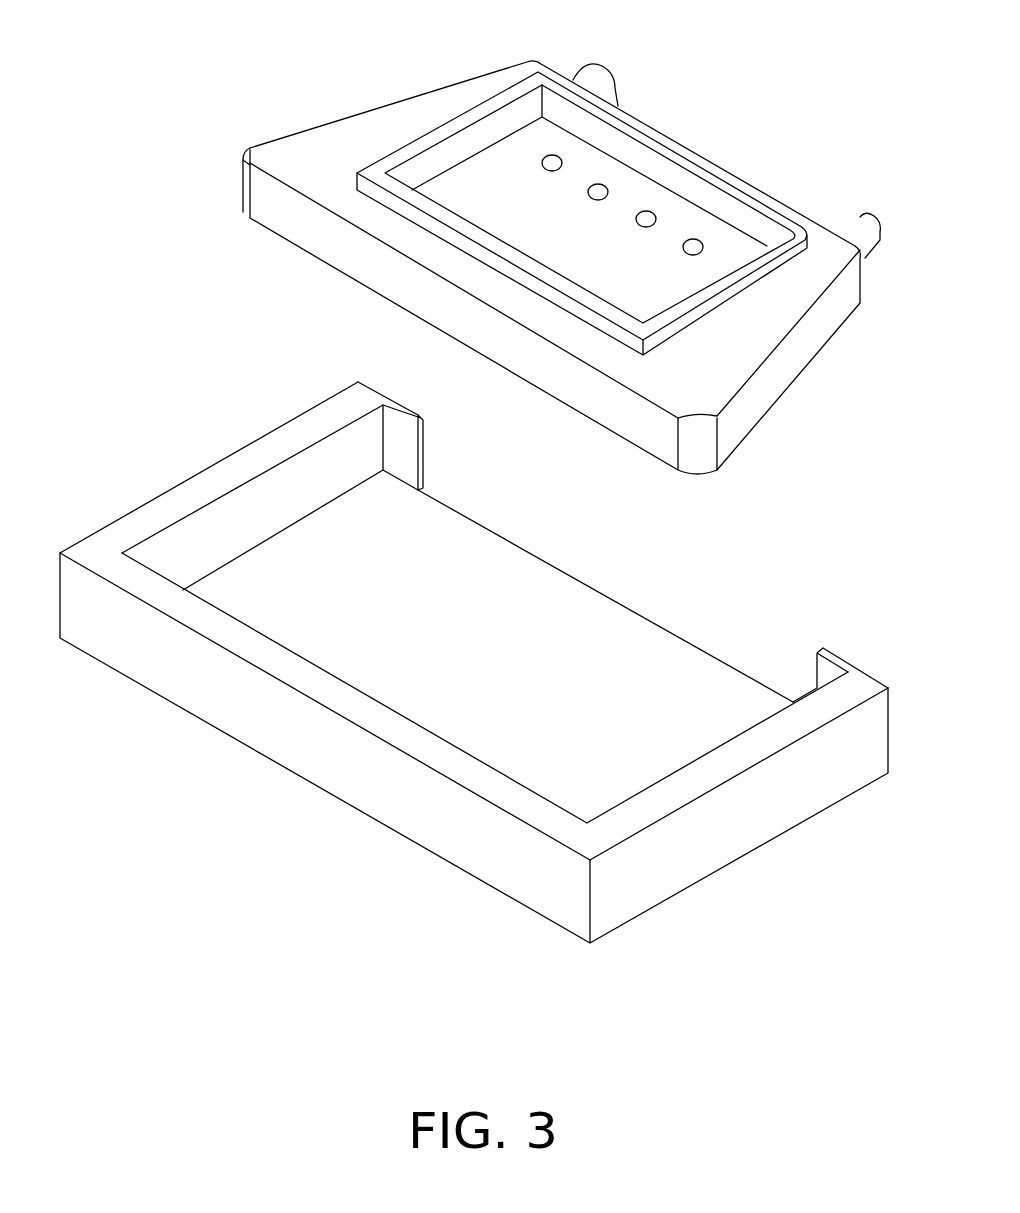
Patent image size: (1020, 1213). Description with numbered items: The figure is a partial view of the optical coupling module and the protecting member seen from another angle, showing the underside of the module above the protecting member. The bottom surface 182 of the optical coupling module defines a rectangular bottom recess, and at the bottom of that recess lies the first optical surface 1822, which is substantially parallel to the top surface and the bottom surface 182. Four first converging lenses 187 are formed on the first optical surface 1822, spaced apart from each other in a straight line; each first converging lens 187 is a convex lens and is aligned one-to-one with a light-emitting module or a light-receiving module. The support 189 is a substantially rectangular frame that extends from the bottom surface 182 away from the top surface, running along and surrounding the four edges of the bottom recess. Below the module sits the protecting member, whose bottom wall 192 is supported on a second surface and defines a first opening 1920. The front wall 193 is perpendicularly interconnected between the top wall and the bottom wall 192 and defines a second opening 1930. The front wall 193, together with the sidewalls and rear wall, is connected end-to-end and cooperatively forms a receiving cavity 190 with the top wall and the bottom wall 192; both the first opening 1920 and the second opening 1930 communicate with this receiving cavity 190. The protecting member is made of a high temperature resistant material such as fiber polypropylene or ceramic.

The bottom surface 182 is at (365, 147).
The support 189 is at (460, 125).
The first converging lenses 187 is at (553, 162).
The first optical surface 1822 is at (627, 193).
The front wall 193 is at (403, 442).
The first opening 1920 is at (300, 478).
The bottom wall 192 is at (130, 532).
The second opening 1930 is at (513, 512).
The receiving cavity 190 is at (675, 705).